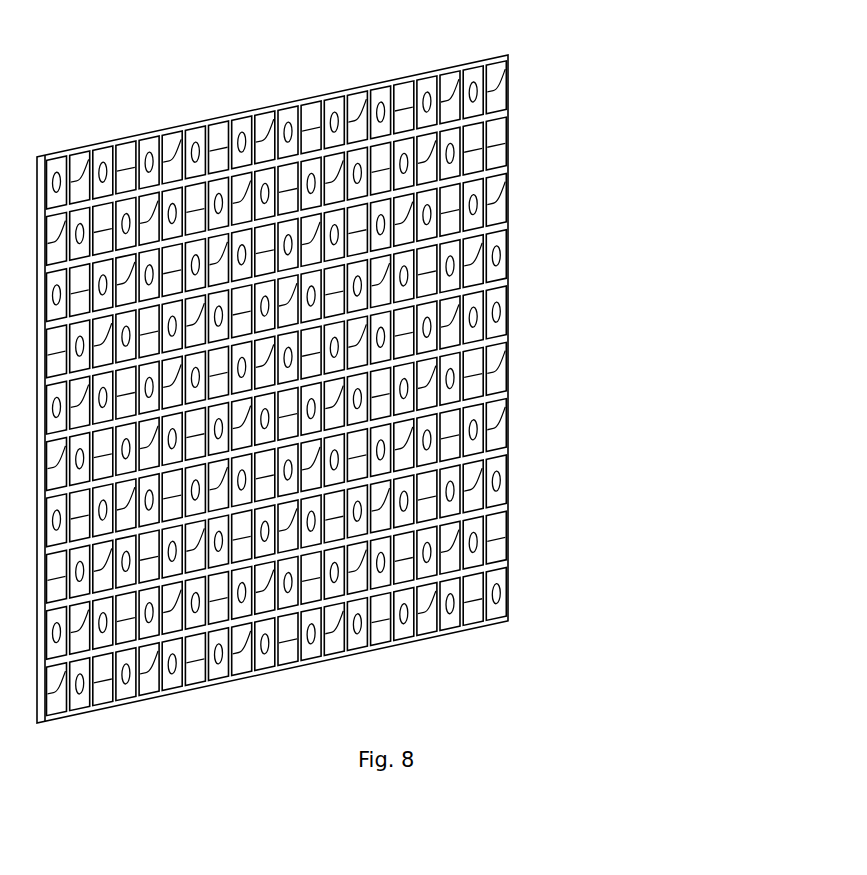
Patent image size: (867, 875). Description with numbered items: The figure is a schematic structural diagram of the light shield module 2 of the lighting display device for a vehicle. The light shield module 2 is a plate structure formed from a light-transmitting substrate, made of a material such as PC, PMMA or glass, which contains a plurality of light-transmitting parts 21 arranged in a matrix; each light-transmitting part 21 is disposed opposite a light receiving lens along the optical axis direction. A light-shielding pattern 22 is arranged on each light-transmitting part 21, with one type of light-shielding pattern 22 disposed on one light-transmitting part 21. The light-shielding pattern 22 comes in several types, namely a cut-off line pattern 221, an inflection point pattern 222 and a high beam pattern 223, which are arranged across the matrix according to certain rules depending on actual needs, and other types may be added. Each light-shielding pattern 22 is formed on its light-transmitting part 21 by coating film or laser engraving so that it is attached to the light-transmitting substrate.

The light shield module 2 is at (398, 363).
The light-transmitting part 21 is at (507, 387).
The light-shielding pattern 22 is at (622, 115).
The cut-off line pattern 221 is at (492, 85).
The inflection point pattern 222 is at (503, 138).
The high beam pattern 223 is at (567, 198).